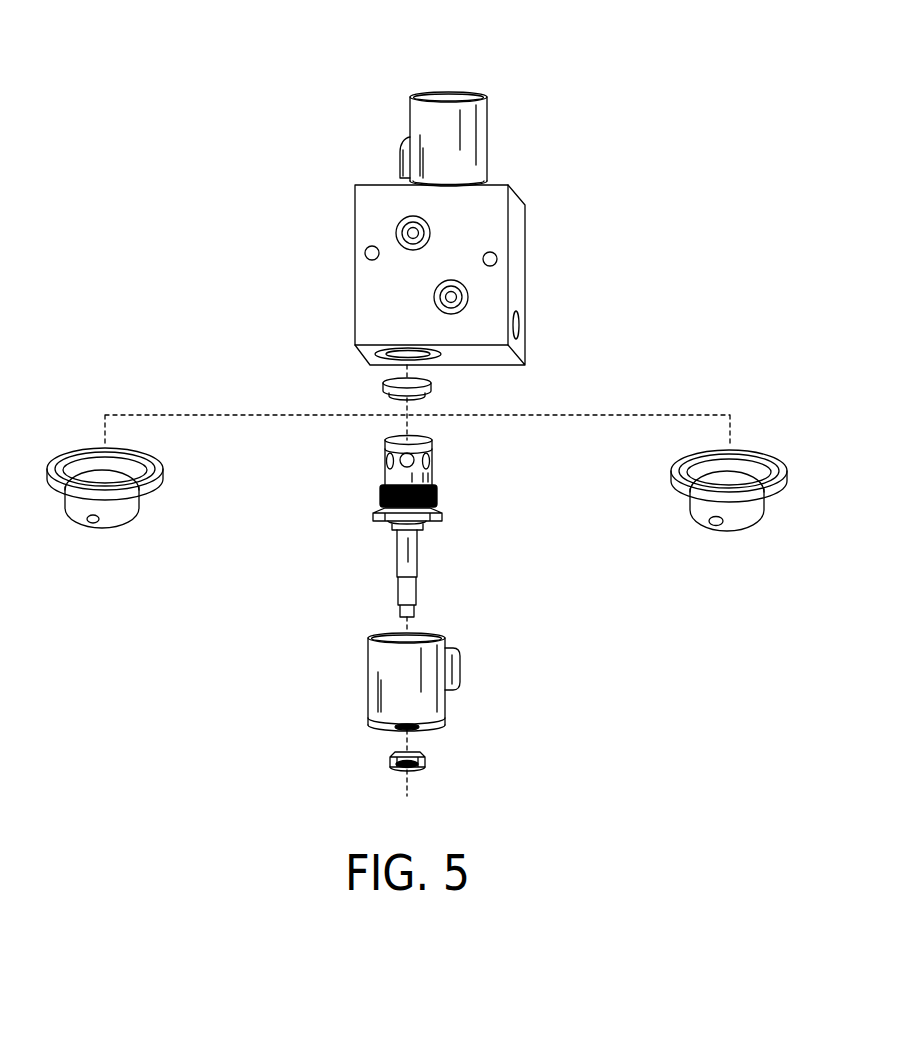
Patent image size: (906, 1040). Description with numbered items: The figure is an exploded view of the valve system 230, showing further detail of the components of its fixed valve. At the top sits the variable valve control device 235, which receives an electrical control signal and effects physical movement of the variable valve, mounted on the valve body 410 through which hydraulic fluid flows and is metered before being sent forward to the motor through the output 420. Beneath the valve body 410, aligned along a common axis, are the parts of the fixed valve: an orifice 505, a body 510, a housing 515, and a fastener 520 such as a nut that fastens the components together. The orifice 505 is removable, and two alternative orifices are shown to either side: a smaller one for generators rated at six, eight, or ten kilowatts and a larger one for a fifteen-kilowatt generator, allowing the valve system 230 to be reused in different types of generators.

The valve system 230 is at (553, 83).
The variable valve control device 235 is at (433, 97).
The valve body 410 is at (517, 242).
The output 420 is at (517, 328).
The orifice 505 is at (383, 384).
The body 510 is at (373, 518).
The housing 515 is at (375, 662).
The fastener 520 is at (390, 762).